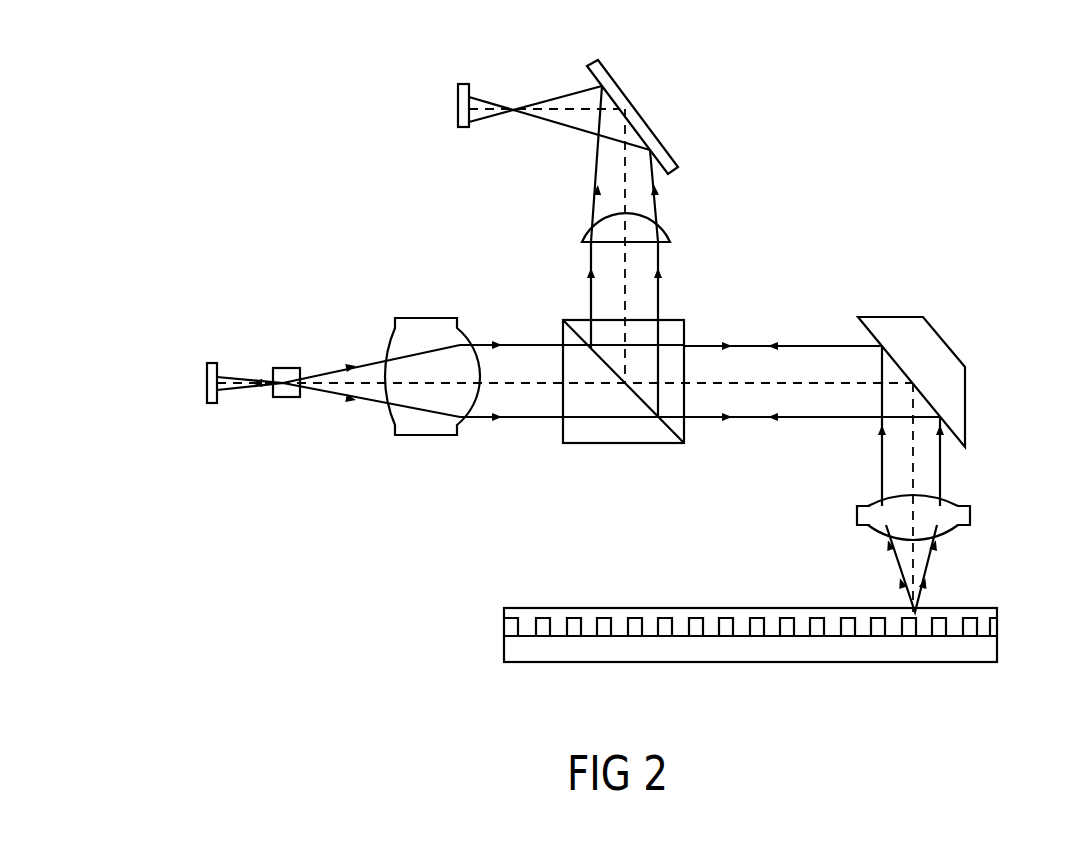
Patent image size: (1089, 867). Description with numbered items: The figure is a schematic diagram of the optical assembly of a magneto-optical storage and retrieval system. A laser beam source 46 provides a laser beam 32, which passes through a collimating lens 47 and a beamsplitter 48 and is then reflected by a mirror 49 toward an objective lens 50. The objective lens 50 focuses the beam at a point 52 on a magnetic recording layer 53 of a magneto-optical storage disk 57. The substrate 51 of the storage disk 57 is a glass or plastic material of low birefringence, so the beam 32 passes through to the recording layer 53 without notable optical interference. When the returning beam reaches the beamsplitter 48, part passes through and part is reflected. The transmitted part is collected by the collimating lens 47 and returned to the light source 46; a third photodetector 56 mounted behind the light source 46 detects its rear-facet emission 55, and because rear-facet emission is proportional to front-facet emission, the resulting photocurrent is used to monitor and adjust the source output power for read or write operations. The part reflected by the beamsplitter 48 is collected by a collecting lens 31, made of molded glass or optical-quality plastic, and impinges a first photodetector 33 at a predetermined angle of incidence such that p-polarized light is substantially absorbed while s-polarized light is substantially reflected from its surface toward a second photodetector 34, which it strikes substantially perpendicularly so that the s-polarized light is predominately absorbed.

The collecting lens 31 is at (668, 232).
The laser beam 32 is at (817, 346).
The first photodetector 33 is at (676, 172).
The second photodetector 34 is at (460, 120).
The laser beam source 46 is at (288, 368).
The collimating lens 47 is at (430, 323).
The beamsplitter 48 is at (684, 330).
The mirror 49 is at (937, 328).
The objective lens 50 is at (965, 528).
The substrate 51 is at (998, 610).
The point 52 is at (922, 608).
The magnetic recording layer 53 is at (800, 608).
The rear-facet emission 55 is at (228, 388).
The third photodetector 56 is at (215, 362).
The magneto-optical storage disk 57 is at (998, 653).